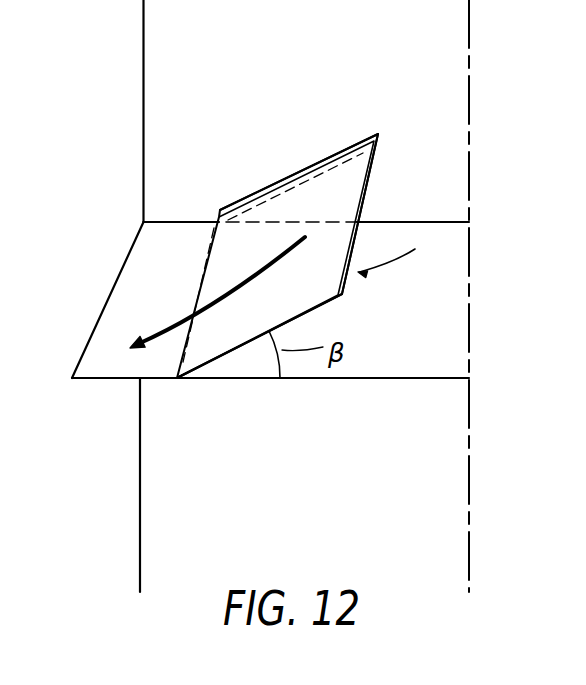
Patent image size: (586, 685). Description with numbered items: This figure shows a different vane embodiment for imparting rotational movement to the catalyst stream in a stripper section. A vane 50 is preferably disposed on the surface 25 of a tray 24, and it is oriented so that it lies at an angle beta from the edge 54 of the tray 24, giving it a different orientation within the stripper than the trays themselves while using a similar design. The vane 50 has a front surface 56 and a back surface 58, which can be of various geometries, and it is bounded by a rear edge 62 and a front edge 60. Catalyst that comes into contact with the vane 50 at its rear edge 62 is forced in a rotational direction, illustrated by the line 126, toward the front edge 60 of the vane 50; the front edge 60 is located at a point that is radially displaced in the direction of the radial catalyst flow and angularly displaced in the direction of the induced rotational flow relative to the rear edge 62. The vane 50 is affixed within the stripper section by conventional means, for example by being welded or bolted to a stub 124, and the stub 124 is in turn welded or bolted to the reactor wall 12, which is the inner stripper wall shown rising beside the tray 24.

The reactor wall 12 is at (143, 77).
The tray 24 is at (443, 368).
The surface of the tray 25 is at (157, 268).
The vane 50 is at (303, 298).
The edge of the tray 54 is at (318, 380).
The front surface of the vane 56 is at (260, 253).
The back surface of the vane 58 is at (396, 254).
The front edge of the vane 60 is at (194, 283).
The rear edge of the vane 62 is at (363, 201).
The stub 124 is at (326, 162).
The line illustrating rotational direction 126 is at (221, 300).